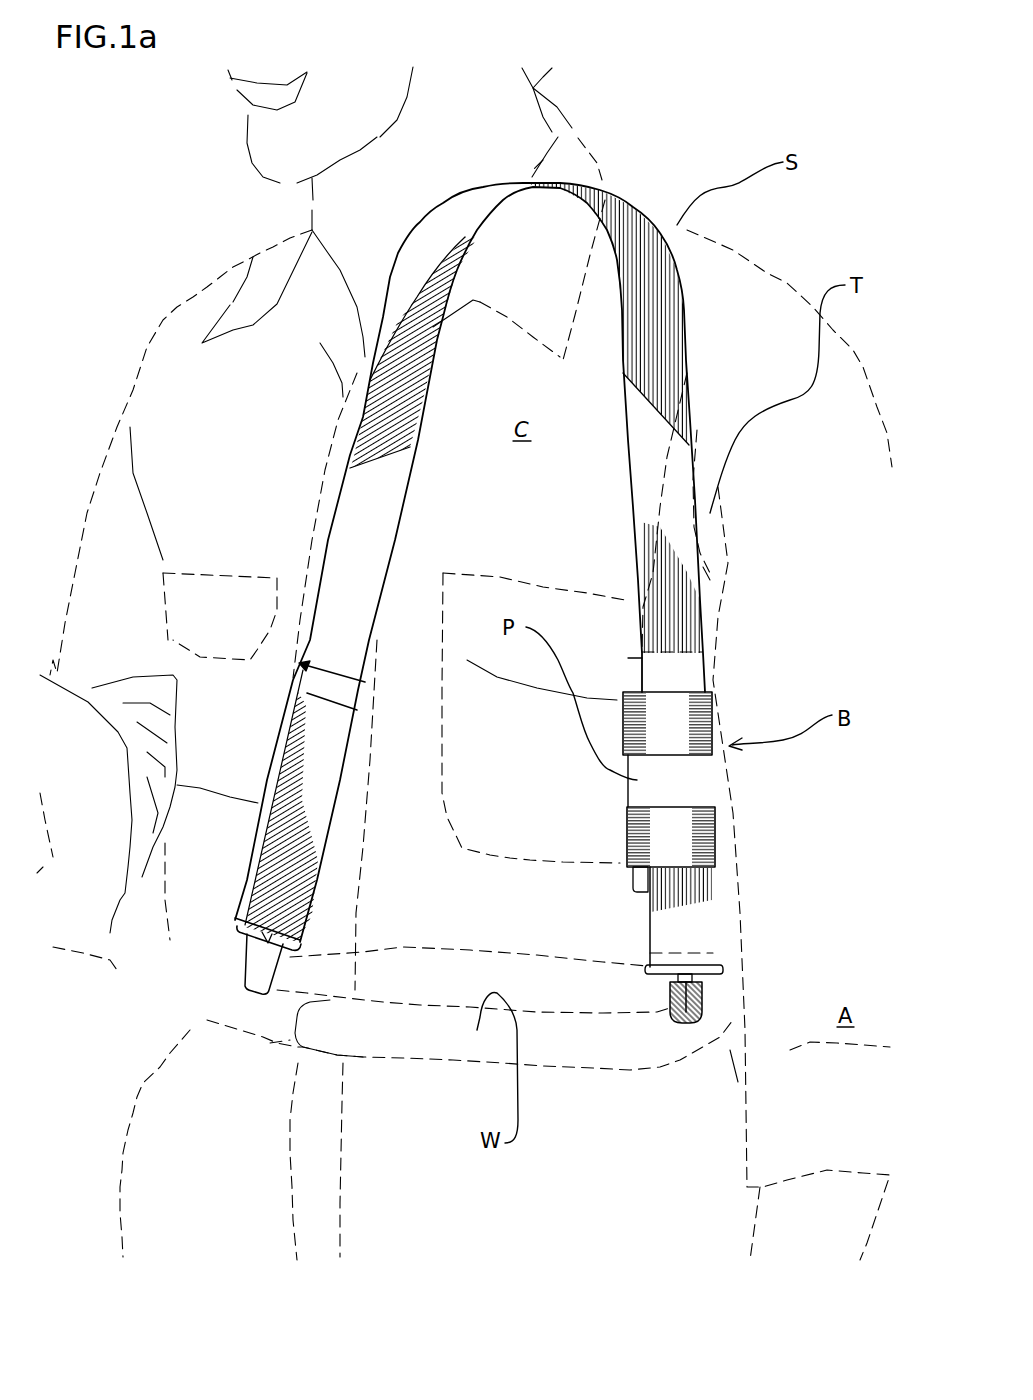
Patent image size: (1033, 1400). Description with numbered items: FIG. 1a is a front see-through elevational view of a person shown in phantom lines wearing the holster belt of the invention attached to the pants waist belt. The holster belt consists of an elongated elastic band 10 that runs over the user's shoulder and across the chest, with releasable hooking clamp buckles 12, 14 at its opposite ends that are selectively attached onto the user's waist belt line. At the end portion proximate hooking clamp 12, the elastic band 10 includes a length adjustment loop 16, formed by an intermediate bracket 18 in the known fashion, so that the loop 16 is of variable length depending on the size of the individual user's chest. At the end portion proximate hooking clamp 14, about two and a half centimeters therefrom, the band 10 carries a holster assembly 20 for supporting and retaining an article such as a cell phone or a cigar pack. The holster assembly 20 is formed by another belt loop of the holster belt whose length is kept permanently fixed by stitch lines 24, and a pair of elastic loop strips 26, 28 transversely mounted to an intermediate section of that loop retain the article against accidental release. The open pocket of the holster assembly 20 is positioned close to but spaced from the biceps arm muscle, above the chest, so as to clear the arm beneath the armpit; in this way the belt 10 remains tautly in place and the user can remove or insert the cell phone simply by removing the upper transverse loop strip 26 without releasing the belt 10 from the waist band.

The elastic band 10 is at (614, 214).
The hooking clamp buckle 12 is at (253, 968).
The hooking clamp buckle 14 is at (703, 1000).
The length adjustment loop 16 is at (303, 833).
The intermediate bracket 18 is at (333, 690).
The holster assembly 20 is at (754, 748).
The stitch lines 24 is at (683, 653).
The elastic loop strip 26 is at (687, 720).
The elastic loop strip 28 is at (690, 830).